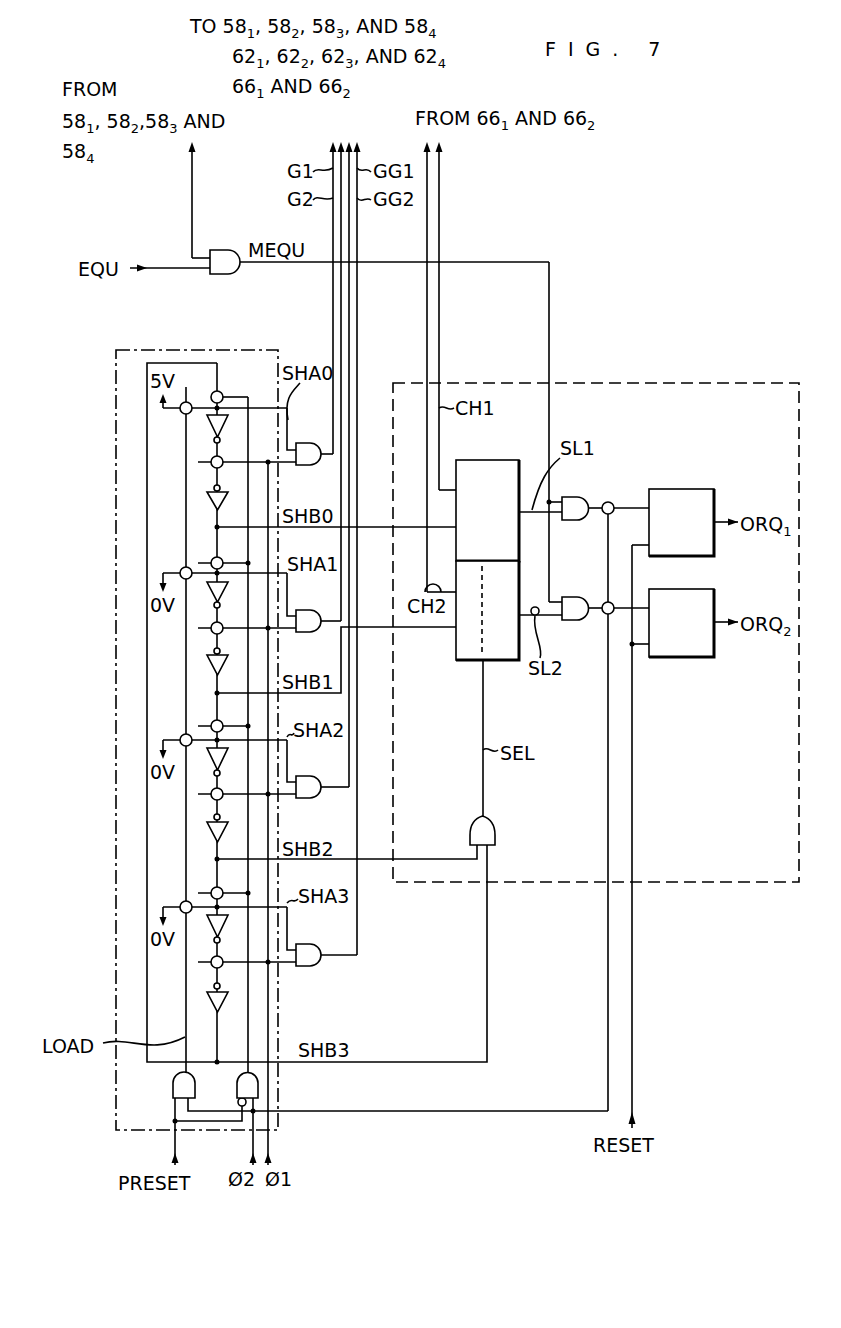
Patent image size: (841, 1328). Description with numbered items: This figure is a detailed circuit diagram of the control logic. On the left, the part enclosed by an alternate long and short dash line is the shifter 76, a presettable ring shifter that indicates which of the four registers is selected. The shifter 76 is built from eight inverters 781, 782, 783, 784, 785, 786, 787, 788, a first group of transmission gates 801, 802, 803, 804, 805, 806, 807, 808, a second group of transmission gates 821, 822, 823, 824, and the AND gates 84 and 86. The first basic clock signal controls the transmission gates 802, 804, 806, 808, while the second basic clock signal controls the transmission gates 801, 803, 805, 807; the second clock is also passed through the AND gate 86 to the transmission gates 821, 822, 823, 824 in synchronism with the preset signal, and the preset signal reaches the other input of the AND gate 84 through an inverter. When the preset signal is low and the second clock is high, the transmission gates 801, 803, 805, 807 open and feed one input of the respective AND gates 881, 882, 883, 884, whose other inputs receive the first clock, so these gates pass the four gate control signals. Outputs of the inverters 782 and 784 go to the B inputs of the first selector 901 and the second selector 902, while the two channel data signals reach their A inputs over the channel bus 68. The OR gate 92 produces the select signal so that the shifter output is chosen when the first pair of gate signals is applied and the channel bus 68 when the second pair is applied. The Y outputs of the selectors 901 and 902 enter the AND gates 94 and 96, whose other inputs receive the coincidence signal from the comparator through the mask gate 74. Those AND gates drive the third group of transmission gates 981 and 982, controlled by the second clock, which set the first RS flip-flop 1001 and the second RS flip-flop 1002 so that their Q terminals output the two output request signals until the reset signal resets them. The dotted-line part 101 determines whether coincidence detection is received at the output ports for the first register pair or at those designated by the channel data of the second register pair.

The mask gate 74 is at (224, 250).
The channel bus 68 is at (440, 180).
The shifter 76 is at (116, 860).
The inverter 781 is at (206, 428).
The inverter 782 is at (206, 500).
The inverter 783 is at (206, 592).
The inverter 784 is at (206, 665).
The inverter 785 is at (206, 760).
The inverter 786 is at (206, 832).
The inverter 787 is at (206, 927).
The inverter 788 is at (206, 1002).
The transmission gate 801 is at (222, 393).
The transmission gate 802 is at (223, 467).
The transmission gate 803 is at (223, 559).
The transmission gate 804 is at (223, 633).
The transmission gate 805 is at (223, 722).
The transmission gate 806 is at (223, 799).
The transmission gate 807 is at (223, 889).
The transmission gate 808 is at (223, 967).
The transmission gate 821 is at (181, 413).
The transmission gate 822 is at (184, 567).
The transmission gate 823 is at (184, 734).
The transmission gate 824 is at (184, 901).
The AND gate 84 is at (237, 1088).
The AND gate 86 is at (173, 1088).
The AND gate 881 is at (305, 443).
The AND gate 882 is at (305, 610).
The AND gate 883 is at (305, 776).
The AND gate 884 is at (305, 944).
The first selector 901 is at (486, 460).
The second selector 902 is at (500, 661).
The OR gate 92 is at (495, 825).
The AND gate 94 is at (573, 497).
The AND gate 96 is at (573, 597).
The transmission gate 981 is at (611, 502).
The transmission gate 982 is at (604, 613).
The first RS flip-flop 1001 is at (662, 489).
The second RS flip-flop 1002 is at (666, 658).
The output-port determining part 101 is at (607, 383).